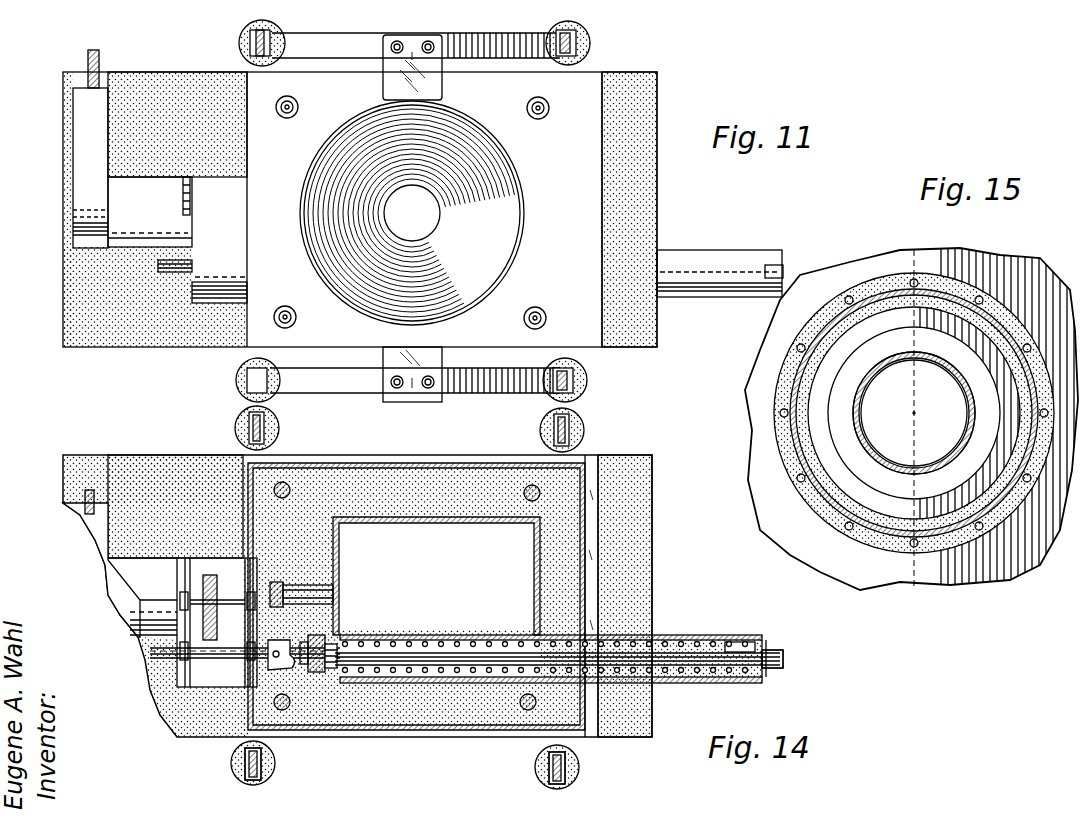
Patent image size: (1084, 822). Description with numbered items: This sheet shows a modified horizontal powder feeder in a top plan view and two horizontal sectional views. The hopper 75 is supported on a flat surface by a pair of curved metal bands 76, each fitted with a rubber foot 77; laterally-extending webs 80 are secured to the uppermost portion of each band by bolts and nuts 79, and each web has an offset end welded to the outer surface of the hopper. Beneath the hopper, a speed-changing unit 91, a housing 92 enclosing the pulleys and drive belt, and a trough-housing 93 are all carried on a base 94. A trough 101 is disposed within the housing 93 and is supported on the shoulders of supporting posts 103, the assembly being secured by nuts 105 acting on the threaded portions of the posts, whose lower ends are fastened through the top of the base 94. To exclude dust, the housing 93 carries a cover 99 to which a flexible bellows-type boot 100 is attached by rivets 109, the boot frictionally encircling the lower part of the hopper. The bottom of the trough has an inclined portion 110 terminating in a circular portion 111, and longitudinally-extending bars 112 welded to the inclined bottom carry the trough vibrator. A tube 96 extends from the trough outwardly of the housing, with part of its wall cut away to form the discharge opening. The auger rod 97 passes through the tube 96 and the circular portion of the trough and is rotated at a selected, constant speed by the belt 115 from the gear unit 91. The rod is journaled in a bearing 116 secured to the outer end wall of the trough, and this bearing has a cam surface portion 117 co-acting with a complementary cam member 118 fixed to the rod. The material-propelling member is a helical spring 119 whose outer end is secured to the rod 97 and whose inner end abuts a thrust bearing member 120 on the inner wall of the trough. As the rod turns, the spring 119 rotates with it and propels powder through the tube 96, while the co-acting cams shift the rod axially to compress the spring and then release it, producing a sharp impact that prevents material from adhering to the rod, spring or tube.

In FIG. 11, the hopper 75 is at (522, 256).
In FIG. 15, the hopper 75 is at (910, 472).
In FIG. 11, the curved metal bands 76 is at (358, 48).
In FIG. 14, the curved metal bands 76 is at (262, 770).
In FIG. 11, the rubber foot 77 is at (240, 44).
In FIG. 14, the rubber foot 77 is at (236, 782).
In FIG. 11, the nuts 79 is at (396, 42).
In FIG. 11, the laterally-extending webs 80 is at (416, 44).
In FIG. 11, the speed-changing unit 91 is at (110, 238).
In FIG. 14, the speed-changing unit 91 is at (126, 604).
In FIG. 11, the housing 92 is at (202, 303).
In FIG. 14, the housing 93 is at (586, 528).
In FIG. 11, the base 94 is at (640, 118).
In FIG. 14, the base 94 is at (636, 580).
In FIG. 11, the tube 96 is at (706, 258).
In FIG. 14, the tube 96 is at (688, 636).
In FIG. 11, the auger rod 97 is at (192, 266).
In FIG. 14, the auger rod 97 is at (783, 652).
In FIG. 11, the cover 99 is at (590, 321).
In FIG. 15, the cover 99 is at (970, 586).
In FIG. 15, the flexible bellows-type boot 100 is at (928, 545).
In FIG. 14, the trough 101 is at (422, 498).
In FIG. 14, the supporting posts 103 is at (288, 484).
In FIG. 11, the nuts 105 is at (296, 114).
In FIG. 15, the rivets 109 is at (782, 410).
In FIG. 14, the inclined portion 110 is at (496, 534).
In FIG. 14, the circular portion 111 is at (474, 636).
In FIG. 14, the longitudinally-extending bars 112 is at (302, 604).
In FIG. 14, the belt 115 is at (214, 630).
In FIG. 14, the bearing 116 is at (308, 680).
In FIG. 14, the cam surface portion 117 is at (336, 660).
In FIG. 14, the cam member 118 is at (268, 670).
In FIG. 14, the helical spring 119 is at (496, 676).
In FIG. 14, the thrust bearing member 120 is at (338, 636).